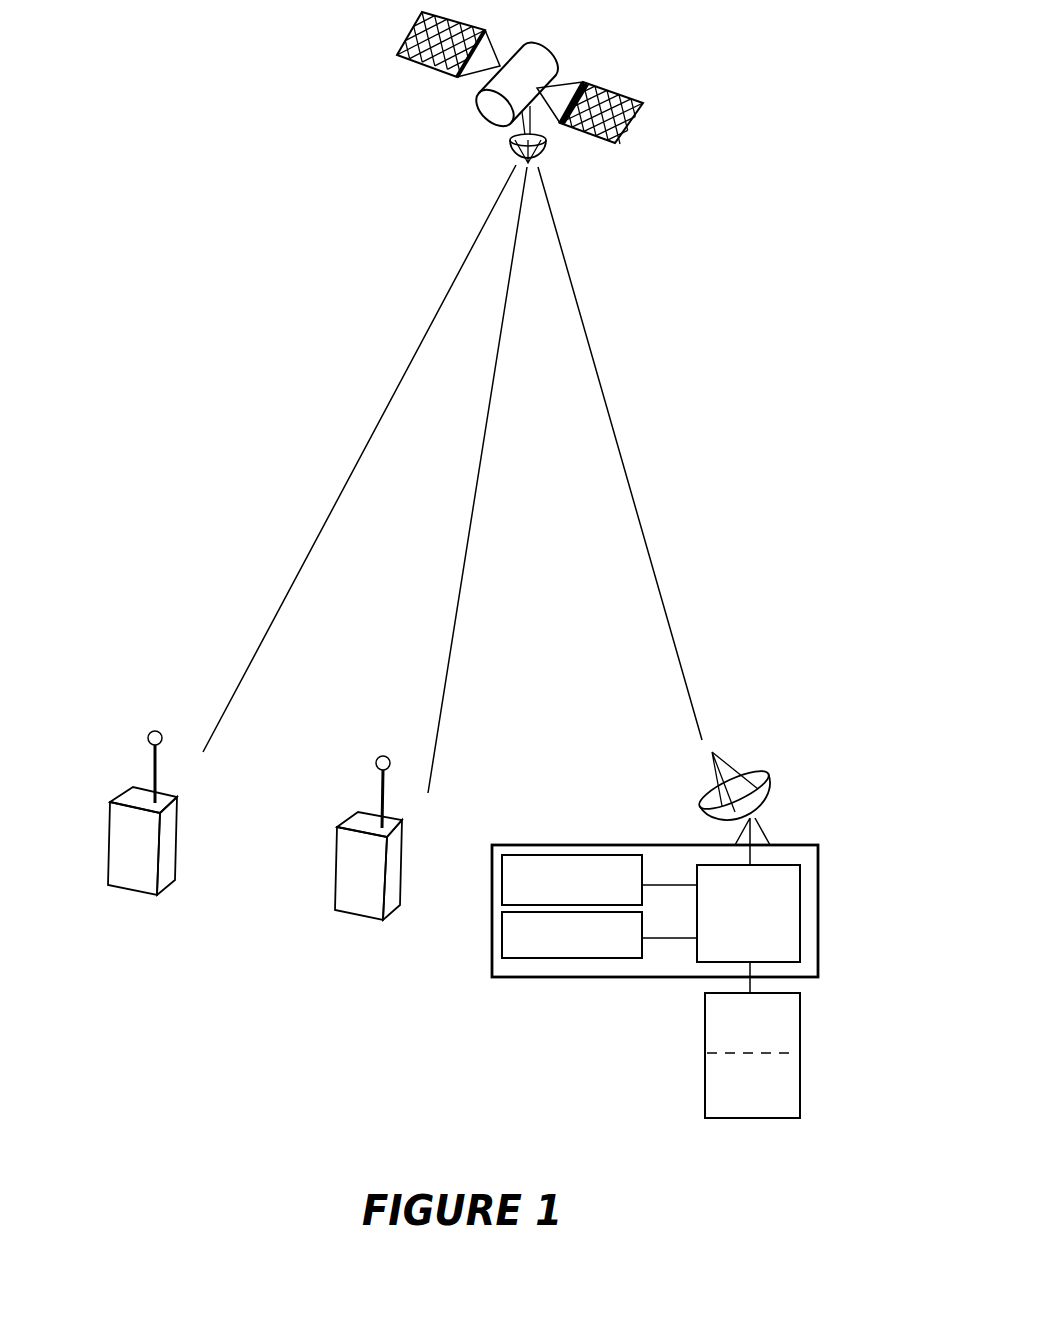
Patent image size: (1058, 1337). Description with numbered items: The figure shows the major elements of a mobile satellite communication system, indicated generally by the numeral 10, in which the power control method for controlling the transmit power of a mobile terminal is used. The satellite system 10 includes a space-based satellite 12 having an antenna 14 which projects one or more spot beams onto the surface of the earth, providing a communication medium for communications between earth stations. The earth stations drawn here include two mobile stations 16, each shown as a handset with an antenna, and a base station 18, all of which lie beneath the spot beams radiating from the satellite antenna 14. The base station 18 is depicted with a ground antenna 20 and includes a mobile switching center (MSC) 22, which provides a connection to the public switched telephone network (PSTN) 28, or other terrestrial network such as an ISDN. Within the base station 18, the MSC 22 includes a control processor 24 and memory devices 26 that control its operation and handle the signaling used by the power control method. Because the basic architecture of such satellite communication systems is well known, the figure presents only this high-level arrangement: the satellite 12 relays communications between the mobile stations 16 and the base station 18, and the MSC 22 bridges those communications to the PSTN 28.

The satellite system 10 is at (700, 340).
The space-based satellite 12 is at (547, 53).
The antenna 14 is at (513, 152).
The mobile stations 16 is at (108, 847).
The base station 18 is at (697, 909).
The ground station antenna 20 is at (770, 768).
The mobile switching center (MSC) 22 is at (802, 935).
The control processor 24 is at (585, 855).
The memory devices 26 is at (590, 960).
The public switched telephone network (PSTN) 28 is at (800, 1027).